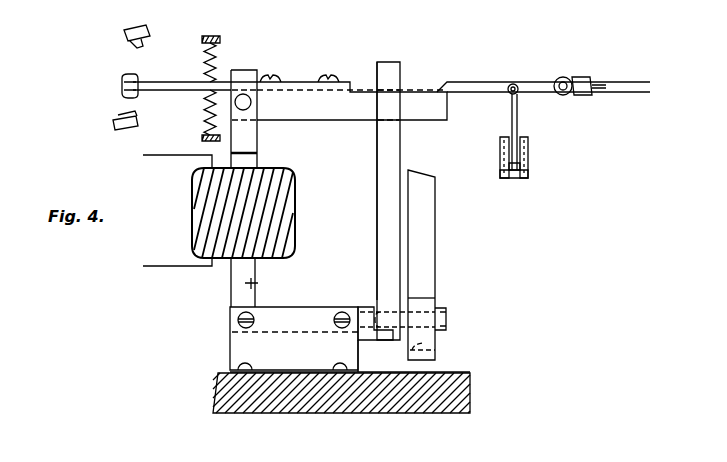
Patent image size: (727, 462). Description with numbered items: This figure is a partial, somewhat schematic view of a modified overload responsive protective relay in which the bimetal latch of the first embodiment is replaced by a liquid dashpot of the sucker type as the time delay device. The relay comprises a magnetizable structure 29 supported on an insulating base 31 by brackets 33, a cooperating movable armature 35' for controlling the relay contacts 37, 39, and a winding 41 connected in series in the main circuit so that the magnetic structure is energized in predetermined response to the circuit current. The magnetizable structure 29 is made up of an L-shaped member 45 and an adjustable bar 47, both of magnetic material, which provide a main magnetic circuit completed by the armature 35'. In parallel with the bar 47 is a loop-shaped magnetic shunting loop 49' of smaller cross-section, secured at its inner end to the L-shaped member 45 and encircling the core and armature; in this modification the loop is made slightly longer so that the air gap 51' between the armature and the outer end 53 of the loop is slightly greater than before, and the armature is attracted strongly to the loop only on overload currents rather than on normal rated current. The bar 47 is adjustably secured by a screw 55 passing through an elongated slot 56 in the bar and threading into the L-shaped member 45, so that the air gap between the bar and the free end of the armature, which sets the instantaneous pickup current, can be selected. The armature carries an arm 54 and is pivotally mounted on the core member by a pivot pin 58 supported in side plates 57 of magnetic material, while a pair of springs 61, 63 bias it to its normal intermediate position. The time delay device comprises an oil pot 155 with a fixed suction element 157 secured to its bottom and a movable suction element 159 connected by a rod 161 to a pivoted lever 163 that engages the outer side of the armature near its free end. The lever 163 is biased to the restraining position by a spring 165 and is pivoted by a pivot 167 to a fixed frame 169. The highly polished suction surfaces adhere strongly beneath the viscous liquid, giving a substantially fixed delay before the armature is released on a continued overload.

The magnetizable structure 29 is at (364, 331).
The insulating base 31 is at (217, 390).
The brackets 33 is at (236, 348).
The armature 35' is at (290, 114).
The relay contact 37 is at (132, 44).
The relay contact 39 is at (122, 80).
The winding 41 is at (298, 245).
The L-shaped member 45 is at (258, 285).
The adjustable bar 47 is at (430, 258).
The magnetic shunting loop 49' is at (353, 210).
The air gap 51' is at (361, 83).
The outer end of loop 53 is at (392, 63).
The arm 54 is at (306, 68).
The screw 55 is at (448, 323).
The elongated slot 56 is at (437, 344).
The side plates 57 is at (250, 144).
The pivot pin 58 is at (251, 102).
The spring 61 is at (206, 55).
The spring 63 is at (205, 107).
The oil pot 155 is at (529, 147).
The fixed suction element 157 is at (511, 178).
The movable suction element 159 is at (522, 165).
The rod 161 is at (518, 117).
The pivoted lever 163 is at (500, 70).
The spring 165 is at (552, 81).
The pivot 167 is at (575, 78).
The fixed frame 169 is at (600, 86).